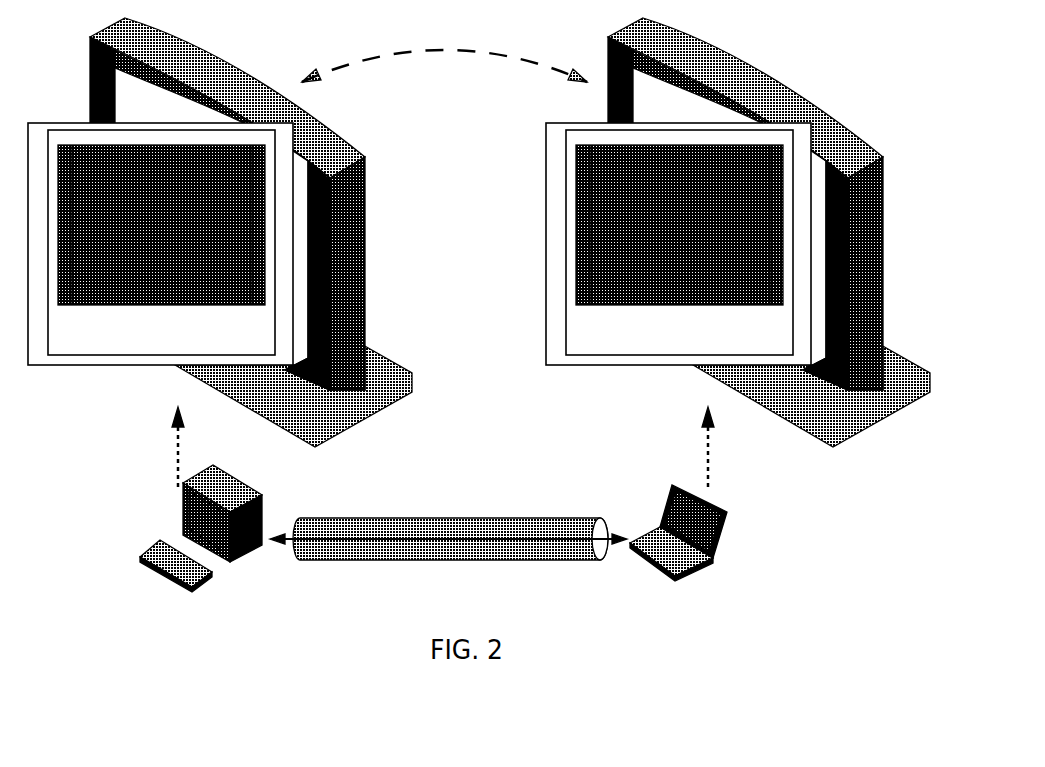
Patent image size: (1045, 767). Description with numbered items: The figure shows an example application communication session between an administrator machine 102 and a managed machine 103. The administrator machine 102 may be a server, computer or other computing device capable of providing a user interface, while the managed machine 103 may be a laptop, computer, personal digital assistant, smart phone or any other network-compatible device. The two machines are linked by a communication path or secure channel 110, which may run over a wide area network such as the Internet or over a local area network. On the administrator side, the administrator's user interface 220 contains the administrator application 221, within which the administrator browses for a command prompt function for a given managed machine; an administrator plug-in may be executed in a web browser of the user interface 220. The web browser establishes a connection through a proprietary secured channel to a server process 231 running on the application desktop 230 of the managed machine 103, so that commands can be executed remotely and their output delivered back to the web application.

The administrator machine 102 is at (262, 513).
The managed machine 103 is at (727, 513).
The secure channel 110 is at (448, 528).
The user interface 220 is at (65, 343).
The administrator application 221 is at (122, 307).
The application desktop 230 is at (583, 343).
The server process 231 is at (640, 307).